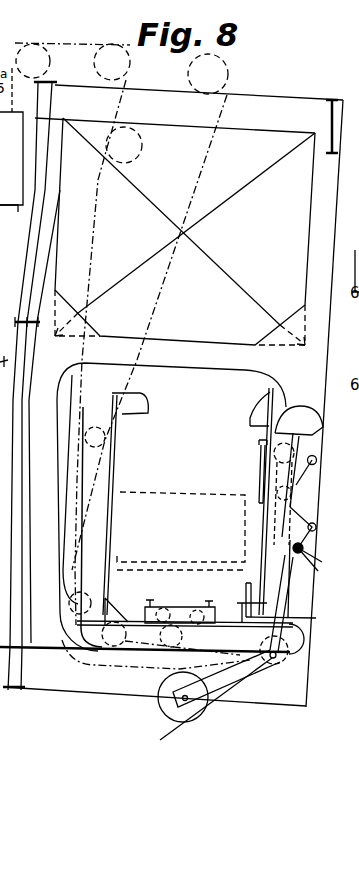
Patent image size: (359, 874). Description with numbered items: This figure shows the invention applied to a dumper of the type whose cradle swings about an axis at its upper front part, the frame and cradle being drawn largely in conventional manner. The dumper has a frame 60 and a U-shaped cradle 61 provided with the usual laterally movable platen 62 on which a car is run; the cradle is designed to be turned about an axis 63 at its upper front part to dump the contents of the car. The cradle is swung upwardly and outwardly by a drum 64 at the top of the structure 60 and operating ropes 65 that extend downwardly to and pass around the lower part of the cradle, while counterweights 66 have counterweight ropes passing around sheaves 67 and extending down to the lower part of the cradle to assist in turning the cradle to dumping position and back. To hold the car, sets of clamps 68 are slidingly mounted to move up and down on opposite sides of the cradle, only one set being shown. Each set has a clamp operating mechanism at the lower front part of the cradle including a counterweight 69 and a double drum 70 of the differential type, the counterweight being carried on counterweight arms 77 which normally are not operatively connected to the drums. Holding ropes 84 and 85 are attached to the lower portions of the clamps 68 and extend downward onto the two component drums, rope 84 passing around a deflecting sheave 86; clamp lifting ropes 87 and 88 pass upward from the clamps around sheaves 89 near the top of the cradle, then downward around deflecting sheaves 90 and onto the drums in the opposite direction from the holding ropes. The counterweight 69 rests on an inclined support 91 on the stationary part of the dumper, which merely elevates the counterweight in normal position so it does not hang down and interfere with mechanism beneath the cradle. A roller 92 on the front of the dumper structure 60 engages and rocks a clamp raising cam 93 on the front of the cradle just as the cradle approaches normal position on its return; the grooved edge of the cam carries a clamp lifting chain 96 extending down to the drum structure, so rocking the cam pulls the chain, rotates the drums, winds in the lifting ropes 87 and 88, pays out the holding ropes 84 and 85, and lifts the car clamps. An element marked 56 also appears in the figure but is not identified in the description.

The support 56 is at (9, 215).
The frame 60 is at (293, 98).
The cradle 61 is at (98, 482).
The laterally movable platen 62 is at (186, 606).
The axis 63 is at (318, 466).
The drum 64 is at (230, 76).
The operating ropes 65 is at (208, 167).
The counterweights 66 is at (332, 403).
The sheaves 67 is at (42, 44).
The clamps 68 is at (118, 440).
The counterweight 69 is at (170, 707).
The double drum 70 is at (154, 693).
The counterweight arms 77 is at (226, 678).
The holding rope 84 is at (108, 584).
The holding rope 85 is at (248, 599).
The deflecting sheave 86 is at (159, 636).
The clamp lifting rope 87 is at (80, 493).
The clamp lifting rope 88 is at (292, 480).
The sheaves 89 is at (92, 427).
The deflecting sheaves 90 is at (297, 508).
The inclined support 91 is at (216, 699).
The roller 92 is at (322, 562).
The clamp raising cam 93 is at (305, 548).
The clamp lifting chain 96 is at (322, 640).